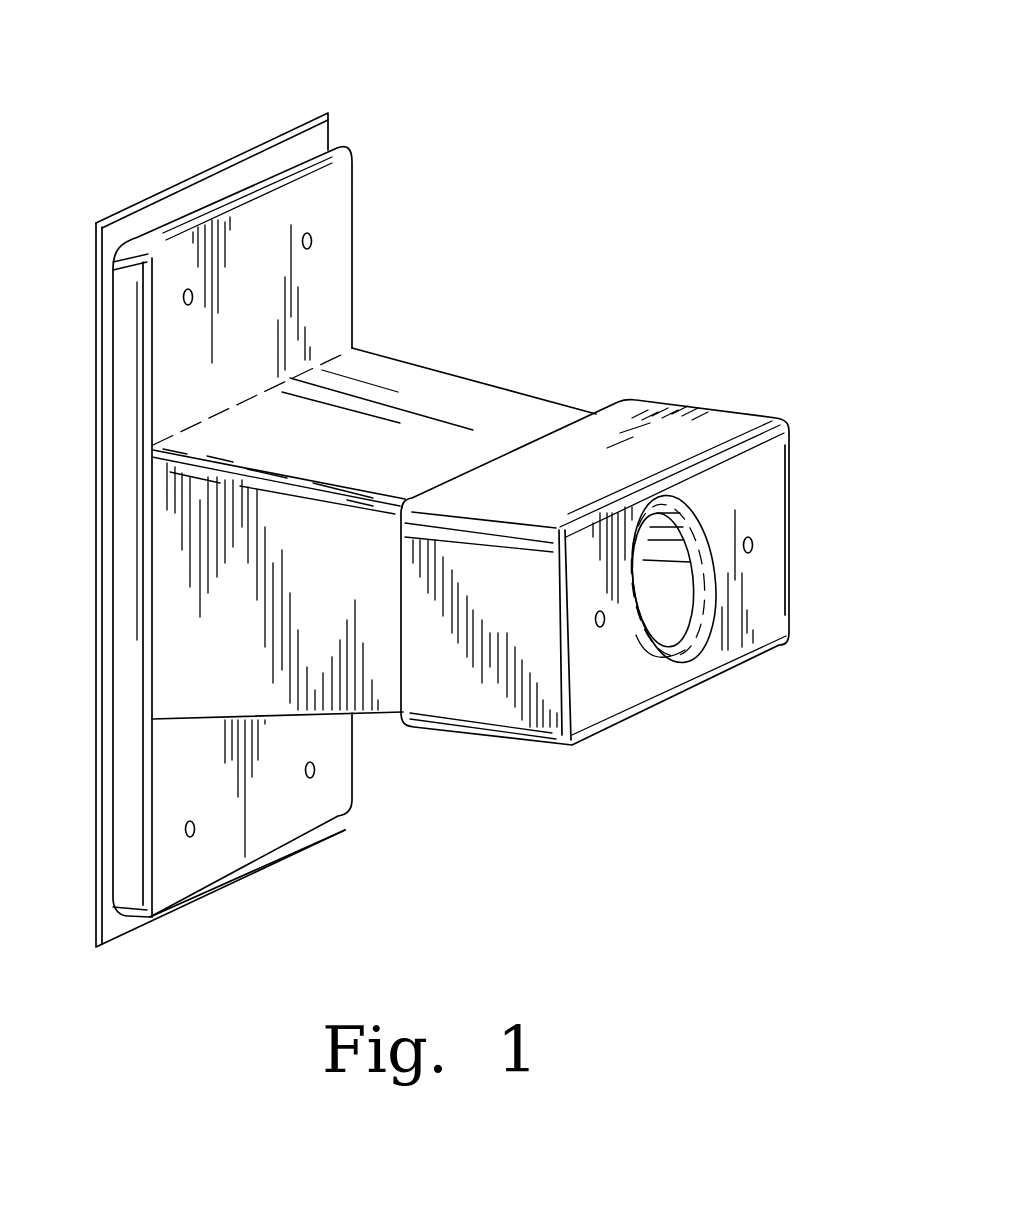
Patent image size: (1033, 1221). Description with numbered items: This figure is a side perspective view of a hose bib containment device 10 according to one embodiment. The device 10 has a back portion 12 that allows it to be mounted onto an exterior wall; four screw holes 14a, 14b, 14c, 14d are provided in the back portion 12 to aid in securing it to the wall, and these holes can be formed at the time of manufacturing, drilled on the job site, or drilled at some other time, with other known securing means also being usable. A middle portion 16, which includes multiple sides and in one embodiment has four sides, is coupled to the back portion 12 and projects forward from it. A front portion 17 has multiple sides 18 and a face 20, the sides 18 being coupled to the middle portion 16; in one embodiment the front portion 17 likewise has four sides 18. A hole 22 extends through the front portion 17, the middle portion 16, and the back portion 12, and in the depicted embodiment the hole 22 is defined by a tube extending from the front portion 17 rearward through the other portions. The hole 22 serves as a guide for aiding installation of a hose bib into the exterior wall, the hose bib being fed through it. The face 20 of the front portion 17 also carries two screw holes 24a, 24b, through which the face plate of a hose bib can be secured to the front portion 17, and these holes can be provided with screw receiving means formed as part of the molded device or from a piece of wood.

The hose bib containment device 10 is at (567, 93).
The back portion 12 is at (176, 385).
The screw hole 14a is at (188, 288).
The screw hole 14b is at (313, 240).
The screw hole 14c is at (191, 837).
The screw hole 14d is at (311, 778).
The middle portion 16 is at (484, 407).
The front portion 17 is at (807, 382).
The sides 18 is at (722, 400).
The face 20 is at (770, 493).
The hole 22 is at (660, 620).
The screw hole 24a is at (600, 628).
The screw hole 24b is at (751, 553).